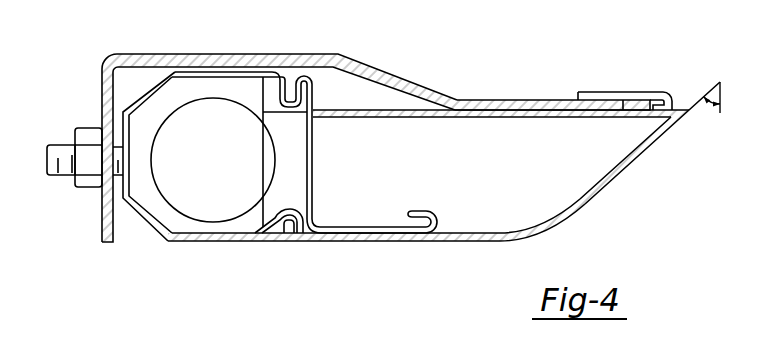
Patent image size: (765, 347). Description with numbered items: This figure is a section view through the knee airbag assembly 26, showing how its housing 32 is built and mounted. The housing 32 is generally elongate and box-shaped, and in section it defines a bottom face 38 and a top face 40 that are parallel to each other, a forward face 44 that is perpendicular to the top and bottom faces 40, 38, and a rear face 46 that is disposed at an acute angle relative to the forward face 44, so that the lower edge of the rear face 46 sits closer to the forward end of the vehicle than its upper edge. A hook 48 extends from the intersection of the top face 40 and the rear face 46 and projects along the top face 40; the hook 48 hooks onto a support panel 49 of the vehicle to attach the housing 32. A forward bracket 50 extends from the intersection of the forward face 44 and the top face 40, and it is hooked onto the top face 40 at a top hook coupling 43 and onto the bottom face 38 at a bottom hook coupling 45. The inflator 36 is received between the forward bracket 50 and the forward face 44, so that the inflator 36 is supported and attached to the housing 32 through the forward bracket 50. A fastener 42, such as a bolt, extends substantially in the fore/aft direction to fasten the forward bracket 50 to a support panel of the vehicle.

The knee airbag assembly 26 is at (398, 97).
The housing 32 is at (357, 245).
The inflator 36 is at (252, 162).
The bottom face 38 is at (394, 243).
The top face 40 is at (527, 113).
The fastener 42 is at (62, 147).
The top hook coupling 43 is at (290, 80).
The forward face 44 is at (123, 195).
The bottom hook coupling 45 is at (280, 239).
The rear face 46 is at (632, 166).
The hook 48 is at (602, 93).
The support panel 49 is at (517, 104).
The forward bracket 50 is at (137, 101).